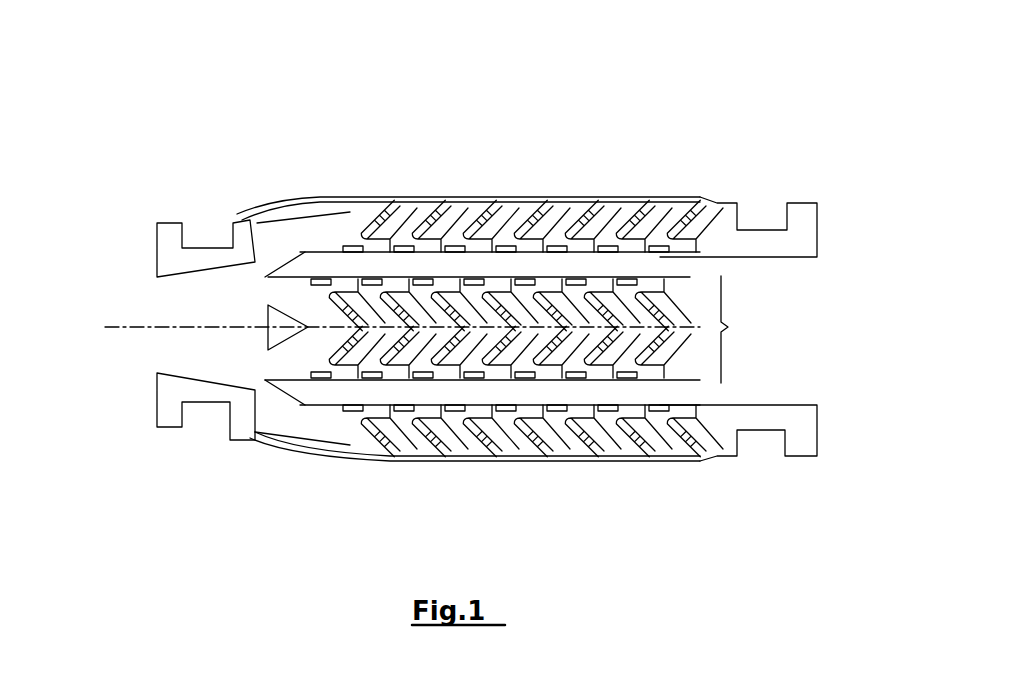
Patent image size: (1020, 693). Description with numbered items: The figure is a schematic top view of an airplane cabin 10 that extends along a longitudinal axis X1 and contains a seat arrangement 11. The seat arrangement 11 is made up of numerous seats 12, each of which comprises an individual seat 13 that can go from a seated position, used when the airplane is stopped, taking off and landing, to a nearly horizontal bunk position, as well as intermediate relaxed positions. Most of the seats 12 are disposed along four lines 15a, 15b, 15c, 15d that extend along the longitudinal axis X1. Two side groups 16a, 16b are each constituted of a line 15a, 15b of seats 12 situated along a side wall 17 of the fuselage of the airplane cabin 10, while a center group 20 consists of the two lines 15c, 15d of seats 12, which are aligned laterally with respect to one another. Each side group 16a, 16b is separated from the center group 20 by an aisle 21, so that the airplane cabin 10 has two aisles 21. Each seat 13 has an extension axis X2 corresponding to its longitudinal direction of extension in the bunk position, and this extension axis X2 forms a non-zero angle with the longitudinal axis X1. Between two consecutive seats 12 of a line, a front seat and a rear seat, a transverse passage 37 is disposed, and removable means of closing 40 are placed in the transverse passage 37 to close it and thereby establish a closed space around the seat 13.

The airplane cabin 10 is at (236, 123).
The seat arrangement 11 is at (249, 384).
The seat 12 is at (544, 190).
The individual seat 13 is at (318, 243).
The line 15a is at (286, 236).
The line 15b is at (290, 433).
The line 15c is at (242, 354).
The line 15d is at (240, 296).
The side group 16a is at (725, 246).
The side group 16b is at (770, 430).
The side wall 17 is at (408, 200).
The center group 20 is at (586, 326).
The aisle 21 is at (490, 252).
The transverse passage 37 is at (462, 238).
The means of closing 40 is at (318, 313).
The longitudinal axis X1 is at (118, 327).
The extension axis X2 is at (227, 217).